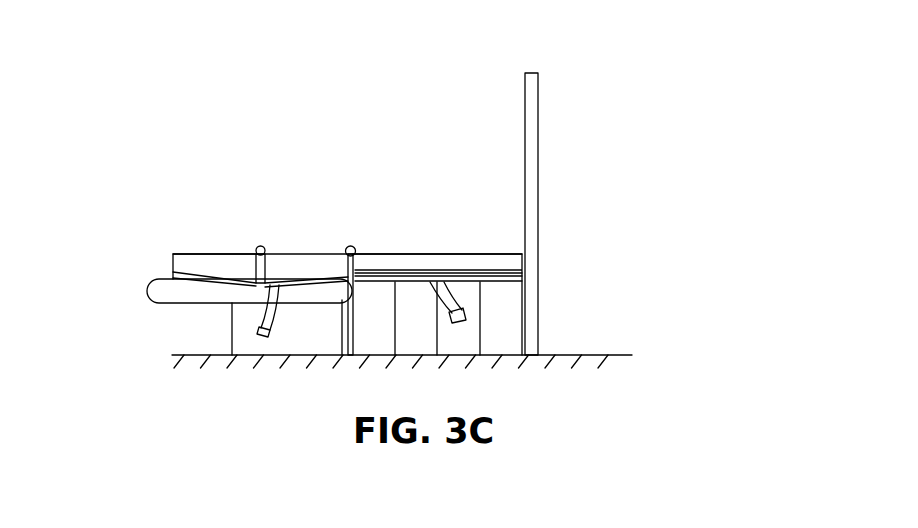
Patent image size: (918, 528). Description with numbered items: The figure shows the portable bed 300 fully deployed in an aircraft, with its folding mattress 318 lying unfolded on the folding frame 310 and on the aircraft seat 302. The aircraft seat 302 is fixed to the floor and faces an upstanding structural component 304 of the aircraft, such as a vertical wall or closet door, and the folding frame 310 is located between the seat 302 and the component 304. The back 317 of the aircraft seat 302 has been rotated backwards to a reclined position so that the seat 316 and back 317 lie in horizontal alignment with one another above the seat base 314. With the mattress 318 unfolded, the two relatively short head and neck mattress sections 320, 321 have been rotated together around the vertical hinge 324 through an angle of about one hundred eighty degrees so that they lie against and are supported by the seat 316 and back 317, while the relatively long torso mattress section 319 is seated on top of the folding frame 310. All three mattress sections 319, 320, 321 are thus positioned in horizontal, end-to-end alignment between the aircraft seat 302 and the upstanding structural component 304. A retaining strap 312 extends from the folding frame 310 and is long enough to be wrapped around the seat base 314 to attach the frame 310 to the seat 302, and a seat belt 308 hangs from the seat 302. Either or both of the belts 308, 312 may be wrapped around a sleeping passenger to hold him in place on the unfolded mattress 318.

The portable bed 300 is at (343, 140).
The aircraft seat 302 is at (133, 299).
The upstanding structural component 304 is at (540, 116).
The seat belt 308 is at (262, 333).
The folding frame 310 is at (493, 323).
The retaining strap 312 is at (462, 301).
The seat base 314 is at (313, 337).
The seat 316 is at (322, 288).
The back 317 is at (212, 292).
The folding mattress 318 is at (390, 248).
The torso mattress section 319 is at (452, 266).
The head and neck mattress section 320 is at (188, 253).
The head and neck mattress section 321 is at (278, 283).
The vertical hinge 324 is at (352, 246).